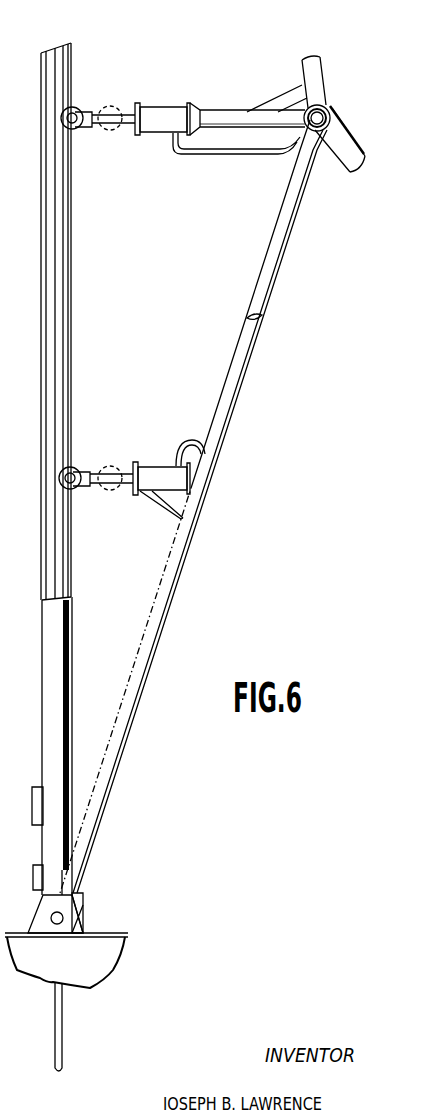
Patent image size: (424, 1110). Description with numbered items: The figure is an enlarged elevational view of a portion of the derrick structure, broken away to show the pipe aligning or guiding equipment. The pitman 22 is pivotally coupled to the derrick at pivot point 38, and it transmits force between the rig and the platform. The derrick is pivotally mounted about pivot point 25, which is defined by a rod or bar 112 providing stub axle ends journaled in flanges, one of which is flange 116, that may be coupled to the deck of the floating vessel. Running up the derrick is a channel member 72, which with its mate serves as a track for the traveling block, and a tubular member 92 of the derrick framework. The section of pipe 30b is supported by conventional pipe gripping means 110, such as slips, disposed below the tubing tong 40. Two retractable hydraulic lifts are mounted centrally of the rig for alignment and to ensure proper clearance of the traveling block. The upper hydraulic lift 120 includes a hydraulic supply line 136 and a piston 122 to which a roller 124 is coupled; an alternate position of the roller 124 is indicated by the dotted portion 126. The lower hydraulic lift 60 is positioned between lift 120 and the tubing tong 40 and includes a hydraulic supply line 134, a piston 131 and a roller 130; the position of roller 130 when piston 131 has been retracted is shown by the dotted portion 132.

The pitman 22 is at (348, 164).
The pivot point 25 is at (57, 924).
The section of pipe 30b is at (63, 1038).
The pivot point 38 is at (328, 111).
The tubing tong 40 is at (73, 786).
The hydraulic lift 60 is at (150, 467).
The channel member 72 is at (70, 544).
The tubular member 92 is at (58, 633).
The pipe gripping means 110 is at (78, 884).
The rod or bar 112 is at (82, 900).
The flange 116 is at (83, 923).
The hydraulic lift 120 is at (157, 108).
The piston 122 is at (96, 110).
The roller 124 is at (77, 133).
The dotted portion 126 is at (113, 106).
The roller 130 is at (77, 468).
The piston 131 is at (118, 486).
The dotted portion 132 is at (113, 466).
The hydraulic supply line 134 is at (193, 440).
The hydraulic supply line 136 is at (200, 162).